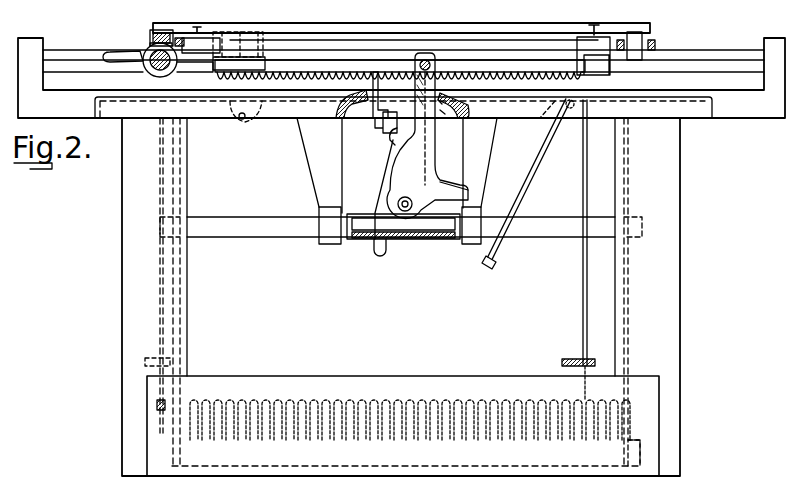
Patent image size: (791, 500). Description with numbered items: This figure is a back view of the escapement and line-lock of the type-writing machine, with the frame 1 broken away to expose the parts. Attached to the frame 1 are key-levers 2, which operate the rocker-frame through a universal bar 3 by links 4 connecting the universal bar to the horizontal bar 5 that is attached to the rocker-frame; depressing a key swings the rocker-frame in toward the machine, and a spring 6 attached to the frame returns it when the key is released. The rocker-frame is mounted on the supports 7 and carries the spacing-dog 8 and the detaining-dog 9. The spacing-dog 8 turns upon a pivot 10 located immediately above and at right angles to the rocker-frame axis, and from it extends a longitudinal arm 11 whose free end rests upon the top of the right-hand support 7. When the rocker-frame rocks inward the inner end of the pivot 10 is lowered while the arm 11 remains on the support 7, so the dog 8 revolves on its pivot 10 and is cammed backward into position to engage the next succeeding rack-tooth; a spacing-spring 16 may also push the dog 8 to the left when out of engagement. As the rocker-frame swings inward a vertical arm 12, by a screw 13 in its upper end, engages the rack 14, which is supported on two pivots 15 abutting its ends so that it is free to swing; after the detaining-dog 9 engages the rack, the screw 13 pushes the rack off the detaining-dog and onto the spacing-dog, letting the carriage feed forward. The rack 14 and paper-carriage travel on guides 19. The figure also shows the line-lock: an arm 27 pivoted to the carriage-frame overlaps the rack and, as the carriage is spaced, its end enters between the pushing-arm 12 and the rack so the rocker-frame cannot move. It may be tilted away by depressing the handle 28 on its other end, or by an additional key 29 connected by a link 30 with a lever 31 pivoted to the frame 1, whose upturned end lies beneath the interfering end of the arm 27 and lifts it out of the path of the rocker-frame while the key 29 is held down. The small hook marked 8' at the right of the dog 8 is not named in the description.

The frame 1 is at (122, 320).
The key-levers 2 is at (304, 402).
The universal bar 3 is at (629, 438).
The links 4 is at (185, 350).
The horizontal bar 5 is at (246, 232).
The spring 6 is at (208, 493).
The supports 7 is at (316, 210).
The spacing-dog 8 is at (386, 112).
The clip 8' is at (445, 119).
The detaining-dog 9 is at (427, 135).
The pivot 10 is at (405, 201).
The longitudinal arm 11 is at (456, 198).
The vertical arm 12 is at (431, 60).
The screw 13 is at (416, 66).
The rack 14 is at (500, 80).
The pivots 15 is at (150, 45).
The spacing-spring 16 is at (380, 190).
The guides 19 is at (75, 50).
The arm 27 is at (264, 68).
The handle 28 is at (117, 52).
The key 29 is at (165, 423).
The link 30 is at (160, 332).
The lever 31 is at (244, 126).